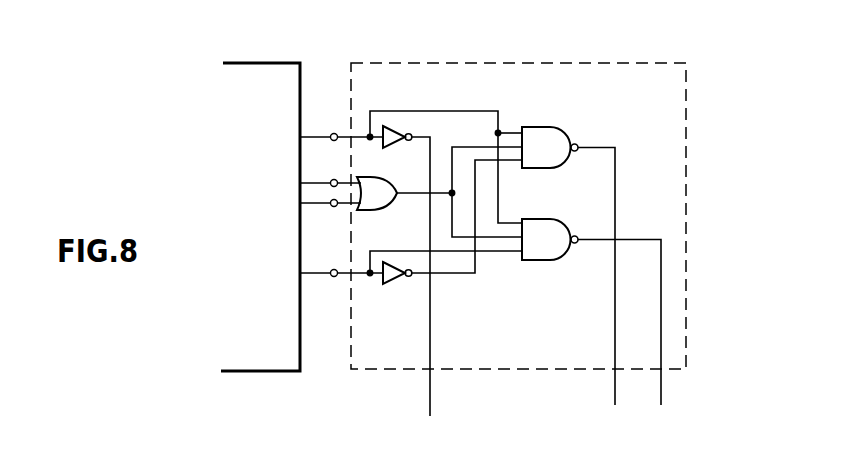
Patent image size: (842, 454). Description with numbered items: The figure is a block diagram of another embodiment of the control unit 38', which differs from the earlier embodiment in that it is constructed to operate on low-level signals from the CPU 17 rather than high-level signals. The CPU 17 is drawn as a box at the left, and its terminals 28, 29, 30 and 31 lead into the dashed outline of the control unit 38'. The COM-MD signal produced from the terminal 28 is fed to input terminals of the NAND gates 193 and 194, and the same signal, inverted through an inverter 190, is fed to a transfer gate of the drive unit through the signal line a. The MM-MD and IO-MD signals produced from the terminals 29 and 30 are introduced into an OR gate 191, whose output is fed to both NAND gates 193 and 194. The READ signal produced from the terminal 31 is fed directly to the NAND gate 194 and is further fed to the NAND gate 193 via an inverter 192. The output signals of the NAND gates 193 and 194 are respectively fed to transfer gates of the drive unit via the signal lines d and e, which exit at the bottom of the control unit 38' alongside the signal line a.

The CPU 17 is at (260, 63).
The control unit 38' is at (518, 202).
The terminal 28 is at (333, 131).
The terminal 29 is at (334, 179).
The terminal 30 is at (334, 207).
The terminal 31 is at (333, 269).
The inverter 190 is at (403, 128).
The OR gate 191 is at (385, 180).
The inverter 192 is at (392, 285).
The NAND gate 193 is at (552, 127).
The NAND gate 194 is at (553, 219).
The signal line a is at (430, 410).
The signal line d is at (613, 399).
The signal line e is at (661, 383).